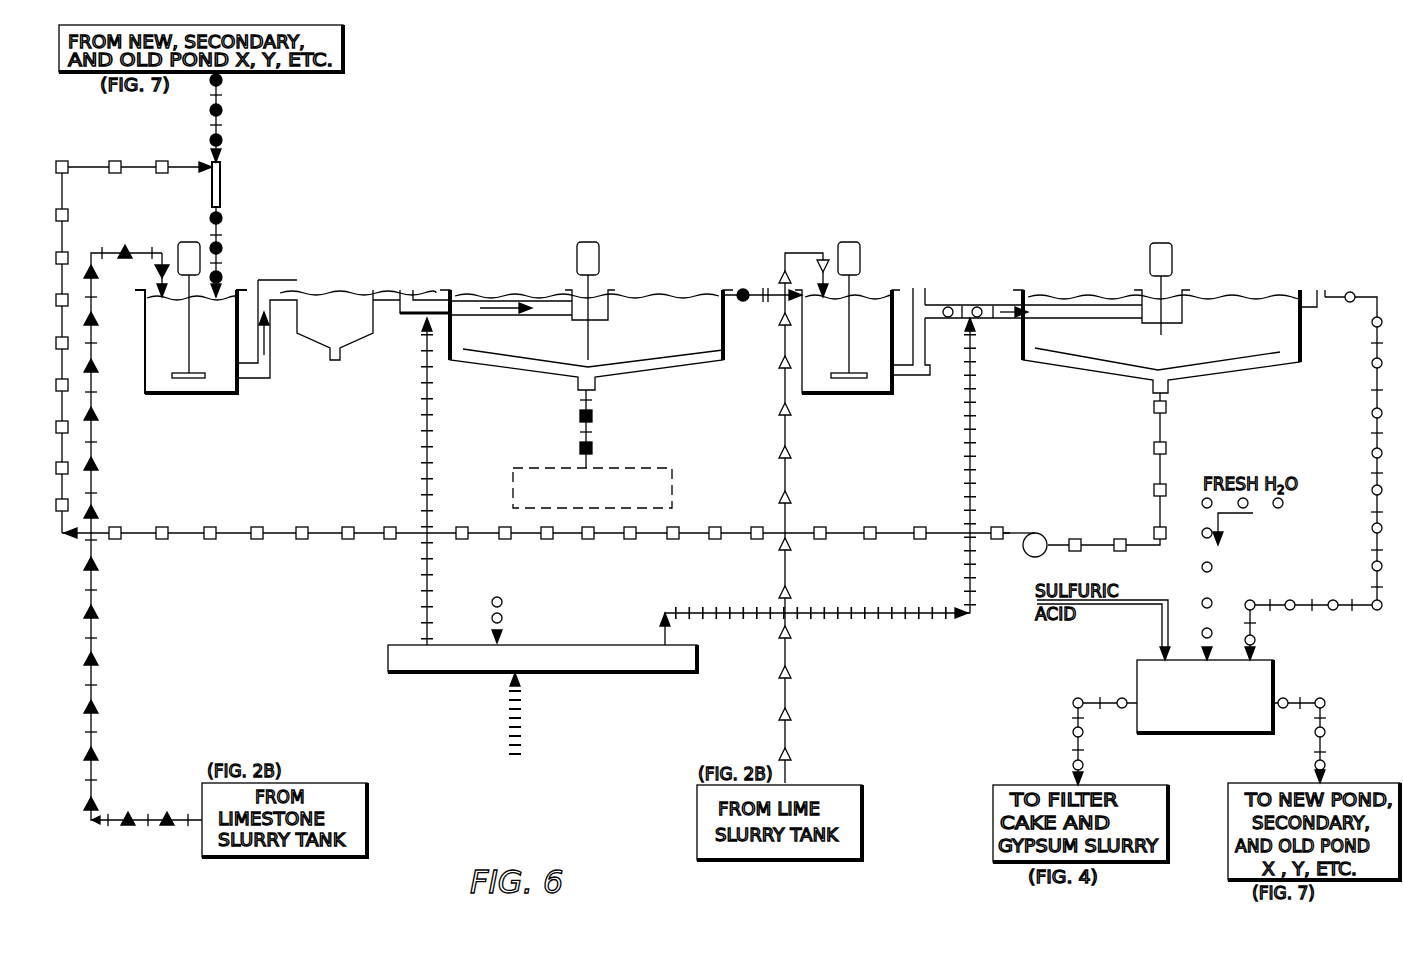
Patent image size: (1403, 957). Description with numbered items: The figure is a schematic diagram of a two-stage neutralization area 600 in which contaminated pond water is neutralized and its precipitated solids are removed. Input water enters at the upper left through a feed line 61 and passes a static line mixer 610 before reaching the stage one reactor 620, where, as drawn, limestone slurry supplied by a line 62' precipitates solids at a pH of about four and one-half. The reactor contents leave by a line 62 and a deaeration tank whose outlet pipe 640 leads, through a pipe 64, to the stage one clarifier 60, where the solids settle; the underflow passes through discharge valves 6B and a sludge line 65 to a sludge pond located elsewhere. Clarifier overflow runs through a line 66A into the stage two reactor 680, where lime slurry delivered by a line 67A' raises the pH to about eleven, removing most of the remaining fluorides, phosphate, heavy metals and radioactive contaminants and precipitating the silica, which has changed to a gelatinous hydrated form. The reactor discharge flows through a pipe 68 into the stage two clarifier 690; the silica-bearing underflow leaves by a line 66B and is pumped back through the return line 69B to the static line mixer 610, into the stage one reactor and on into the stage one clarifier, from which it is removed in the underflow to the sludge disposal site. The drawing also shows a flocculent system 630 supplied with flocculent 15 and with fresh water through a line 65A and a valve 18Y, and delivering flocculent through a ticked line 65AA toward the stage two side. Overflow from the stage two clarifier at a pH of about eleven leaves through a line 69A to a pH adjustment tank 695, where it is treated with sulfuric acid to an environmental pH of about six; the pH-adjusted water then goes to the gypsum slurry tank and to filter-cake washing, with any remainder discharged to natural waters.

The two-stage neutralization area 600 is at (678, 233).
The pond water feed line 61 is at (215, 238).
The static line mixer 610 is at (210, 192).
The return line 69B is at (152, 170).
The limestone slurry line 62' is at (143, 535).
The stage 1 reactor 620 is at (146, 393).
The reactor outlet riser to deaeration tank 62 is at (343, 343).
The deaeration tank outlet pipe 640 is at (365, 348).
The fresh water line 65A is at (425, 563).
The fresh water valve 18Y is at (503, 602).
The stage 1 clarifier 60 is at (512, 370).
The clarifier feed pipe 64 is at (500, 304).
The sludge discharge valves 6B is at (580, 425).
The sludge disposal line 65 is at (528, 468).
The clarifier overflow line to stage 2 reactor 66A is at (779, 291).
The lime slurry line 67A' is at (806, 501).
The stage 2 reactor 680 is at (893, 400).
The stage 2 reactor outlet pipe 68 is at (960, 305).
The flocculent feed line 65AA is at (808, 618).
The stage 2 clarifier 690 is at (1093, 370).
The stage 2 sludge recycle line 66B is at (1157, 465).
The stage 2 clarifier overflow line 69A is at (1367, 297).
The pH adjustment tank 695 is at (1280, 678).
The flocculent system 630 is at (388, 672).
The flocculent feed 15 is at (520, 712).